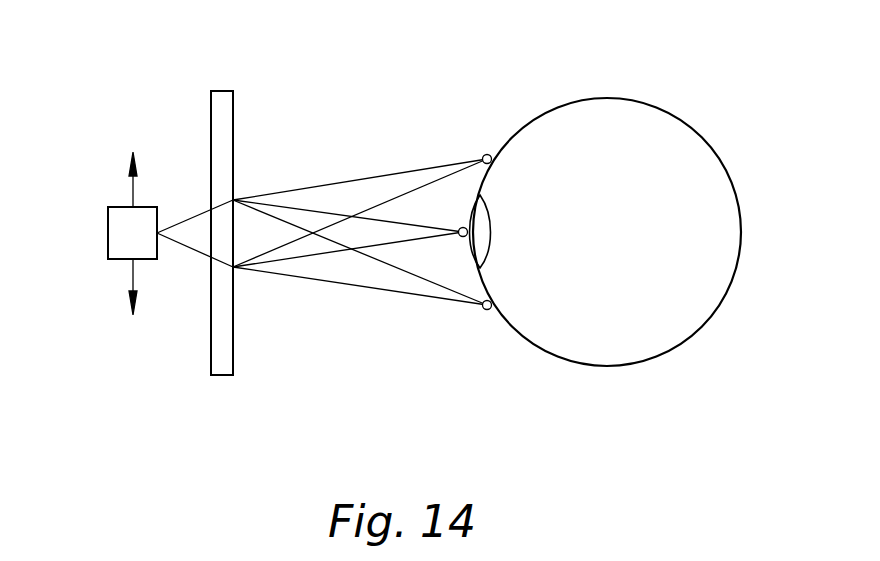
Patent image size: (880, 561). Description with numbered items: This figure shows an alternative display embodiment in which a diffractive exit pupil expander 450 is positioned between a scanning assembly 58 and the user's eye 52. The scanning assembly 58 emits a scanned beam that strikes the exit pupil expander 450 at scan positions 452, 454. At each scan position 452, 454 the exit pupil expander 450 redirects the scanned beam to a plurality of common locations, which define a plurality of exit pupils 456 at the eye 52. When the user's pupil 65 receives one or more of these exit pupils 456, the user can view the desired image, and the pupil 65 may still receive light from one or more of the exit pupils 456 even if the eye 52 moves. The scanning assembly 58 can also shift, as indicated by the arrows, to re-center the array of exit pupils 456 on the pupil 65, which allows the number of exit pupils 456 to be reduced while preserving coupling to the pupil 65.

The eye 52 is at (698, 132).
The scanning assembly 58 is at (108, 236).
The pupil 65 is at (468, 222).
The diffractive exit pupil expander 450 is at (211, 103).
The scan position 452 is at (222, 200).
The scan position 454 is at (222, 267).
The exit pupils 456 is at (486, 155).